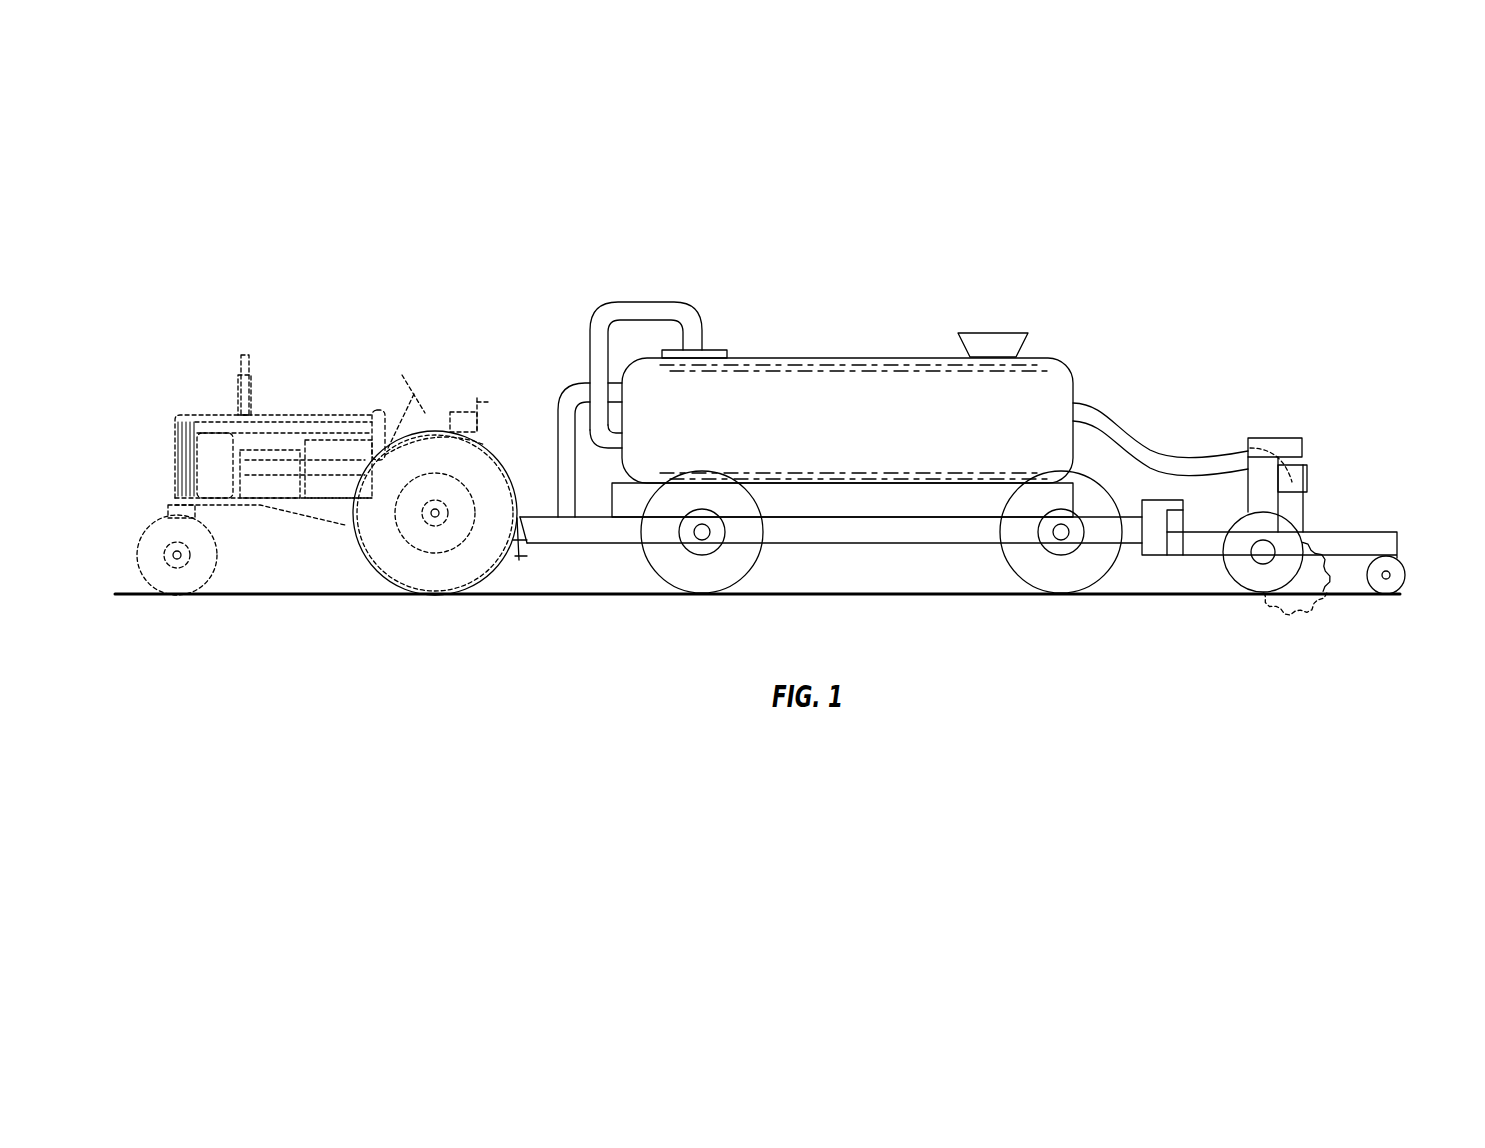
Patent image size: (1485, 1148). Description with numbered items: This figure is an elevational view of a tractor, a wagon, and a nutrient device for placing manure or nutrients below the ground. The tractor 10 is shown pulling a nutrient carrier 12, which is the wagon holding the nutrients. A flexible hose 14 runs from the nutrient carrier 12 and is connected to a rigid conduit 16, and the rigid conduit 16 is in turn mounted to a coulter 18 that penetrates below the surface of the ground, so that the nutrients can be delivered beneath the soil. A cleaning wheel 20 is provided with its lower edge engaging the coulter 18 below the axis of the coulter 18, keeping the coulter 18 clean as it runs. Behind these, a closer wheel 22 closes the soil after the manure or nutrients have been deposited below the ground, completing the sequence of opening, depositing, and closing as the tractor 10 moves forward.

The tractor 10 is at (286, 345).
The nutrient carrier 12 is at (851, 331).
The flexible hose 14 is at (1107, 412).
The rigid conduit 16 is at (1303, 514).
The coulter 18 is at (1328, 546).
The cleaning wheel 20 is at (1222, 563).
The closer wheel 22 is at (1408, 574).